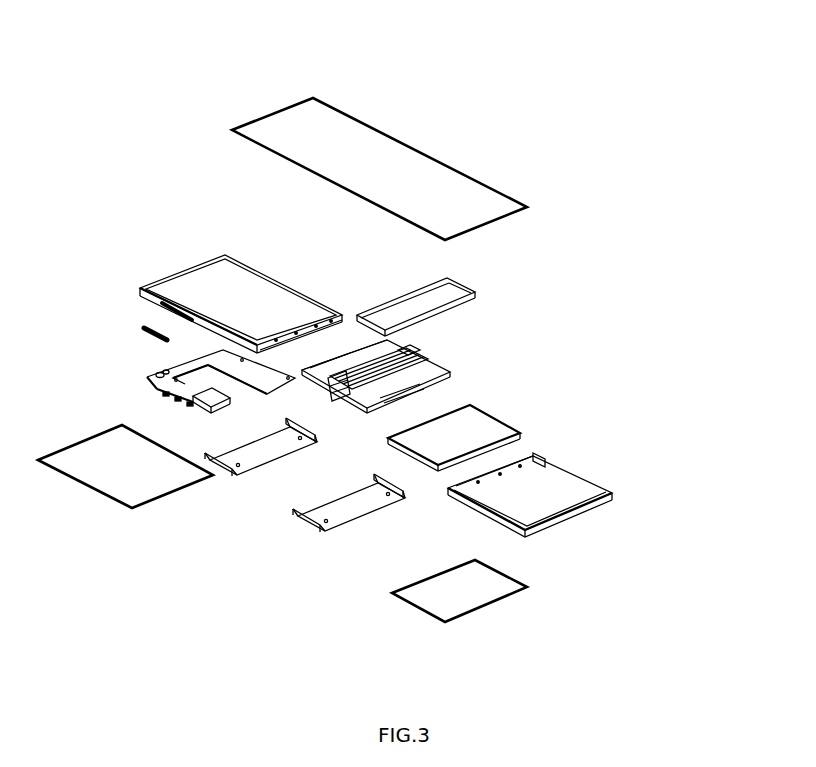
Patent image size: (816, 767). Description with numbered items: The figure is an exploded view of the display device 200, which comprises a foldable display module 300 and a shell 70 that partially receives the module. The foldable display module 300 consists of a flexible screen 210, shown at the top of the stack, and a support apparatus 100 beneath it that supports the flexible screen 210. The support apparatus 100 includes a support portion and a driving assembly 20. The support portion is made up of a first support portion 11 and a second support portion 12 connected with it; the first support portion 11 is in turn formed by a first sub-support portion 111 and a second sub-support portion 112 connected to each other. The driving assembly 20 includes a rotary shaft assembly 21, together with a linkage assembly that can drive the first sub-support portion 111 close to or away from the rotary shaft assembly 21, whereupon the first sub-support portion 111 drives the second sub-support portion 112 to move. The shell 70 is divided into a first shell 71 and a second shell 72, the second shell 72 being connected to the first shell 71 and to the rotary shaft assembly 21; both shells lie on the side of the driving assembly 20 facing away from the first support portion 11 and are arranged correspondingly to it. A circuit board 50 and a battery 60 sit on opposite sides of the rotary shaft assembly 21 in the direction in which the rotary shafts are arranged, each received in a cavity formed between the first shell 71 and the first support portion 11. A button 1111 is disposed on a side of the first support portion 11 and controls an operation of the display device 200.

The display device 200 is at (385, 54).
The foldable display module 300 is at (690, 145).
The flexible screen 210 is at (480, 210).
The support apparatus 100 is at (595, 355).
The first support portion 11 is at (322, 217).
The first sub-support portion 111 is at (352, 356).
The second sub-support portion 112 is at (220, 298).
The button 1111 is at (141, 326).
The circuit board 50 is at (150, 378).
The second support portion 12 is at (470, 290).
The driving assembly 20 is at (433, 349).
The rotary shaft assembly 21 is at (406, 352).
The battery 60 is at (498, 430).
The shell 70 is at (513, 665).
The first shell 71 is at (268, 465).
The second shell 72 is at (118, 487).